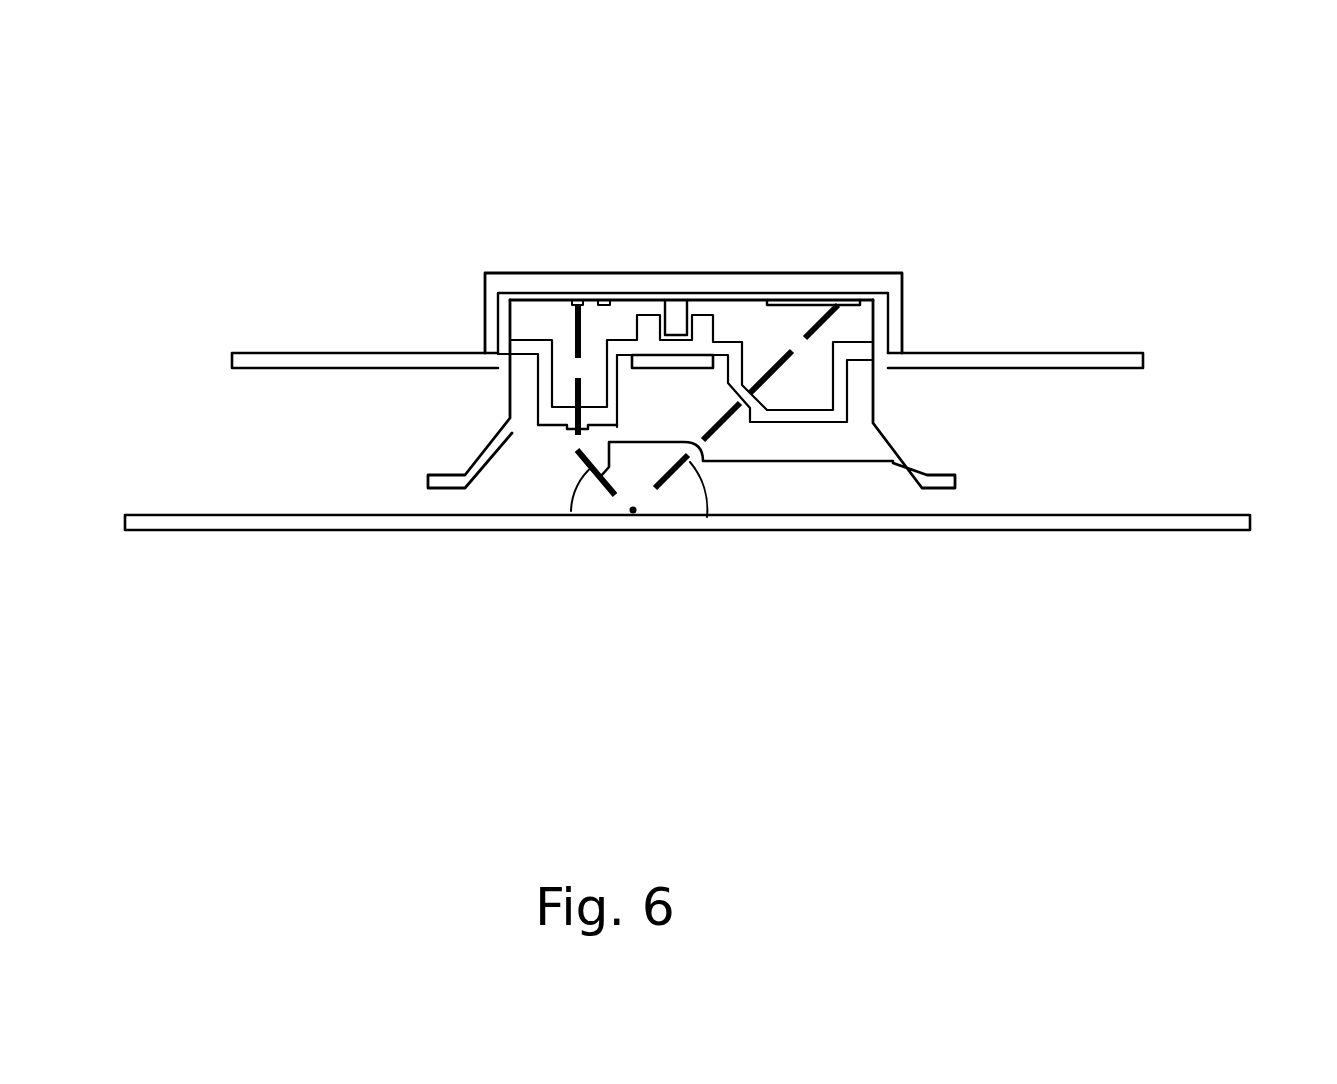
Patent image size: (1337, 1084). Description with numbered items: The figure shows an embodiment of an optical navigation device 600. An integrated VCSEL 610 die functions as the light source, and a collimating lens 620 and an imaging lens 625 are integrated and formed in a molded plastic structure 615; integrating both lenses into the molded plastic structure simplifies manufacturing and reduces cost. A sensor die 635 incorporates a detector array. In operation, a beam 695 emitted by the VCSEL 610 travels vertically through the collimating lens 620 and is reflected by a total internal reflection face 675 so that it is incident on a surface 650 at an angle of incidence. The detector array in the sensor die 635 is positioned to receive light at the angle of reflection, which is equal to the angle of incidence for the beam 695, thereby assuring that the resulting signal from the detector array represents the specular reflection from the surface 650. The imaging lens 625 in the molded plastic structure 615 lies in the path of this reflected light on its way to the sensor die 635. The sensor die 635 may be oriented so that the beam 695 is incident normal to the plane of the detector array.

The optical navigation device 600 is at (752, 130).
The integrated VCSEL die 610 is at (578, 303).
The molded plastic structure 615 is at (860, 447).
The collimating lens 620 is at (565, 437).
The imaging lens 625 is at (723, 440).
The sensor die 635 is at (813, 303).
The surface 650 is at (1203, 518).
The total internal reflection face 675 is at (572, 467).
The beam 695 is at (570, 338).